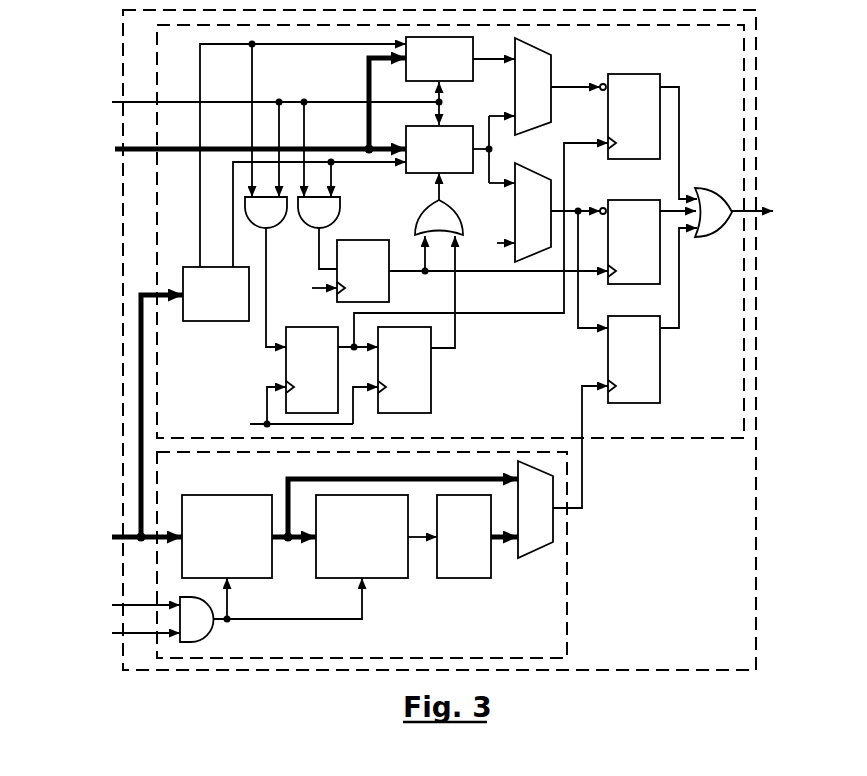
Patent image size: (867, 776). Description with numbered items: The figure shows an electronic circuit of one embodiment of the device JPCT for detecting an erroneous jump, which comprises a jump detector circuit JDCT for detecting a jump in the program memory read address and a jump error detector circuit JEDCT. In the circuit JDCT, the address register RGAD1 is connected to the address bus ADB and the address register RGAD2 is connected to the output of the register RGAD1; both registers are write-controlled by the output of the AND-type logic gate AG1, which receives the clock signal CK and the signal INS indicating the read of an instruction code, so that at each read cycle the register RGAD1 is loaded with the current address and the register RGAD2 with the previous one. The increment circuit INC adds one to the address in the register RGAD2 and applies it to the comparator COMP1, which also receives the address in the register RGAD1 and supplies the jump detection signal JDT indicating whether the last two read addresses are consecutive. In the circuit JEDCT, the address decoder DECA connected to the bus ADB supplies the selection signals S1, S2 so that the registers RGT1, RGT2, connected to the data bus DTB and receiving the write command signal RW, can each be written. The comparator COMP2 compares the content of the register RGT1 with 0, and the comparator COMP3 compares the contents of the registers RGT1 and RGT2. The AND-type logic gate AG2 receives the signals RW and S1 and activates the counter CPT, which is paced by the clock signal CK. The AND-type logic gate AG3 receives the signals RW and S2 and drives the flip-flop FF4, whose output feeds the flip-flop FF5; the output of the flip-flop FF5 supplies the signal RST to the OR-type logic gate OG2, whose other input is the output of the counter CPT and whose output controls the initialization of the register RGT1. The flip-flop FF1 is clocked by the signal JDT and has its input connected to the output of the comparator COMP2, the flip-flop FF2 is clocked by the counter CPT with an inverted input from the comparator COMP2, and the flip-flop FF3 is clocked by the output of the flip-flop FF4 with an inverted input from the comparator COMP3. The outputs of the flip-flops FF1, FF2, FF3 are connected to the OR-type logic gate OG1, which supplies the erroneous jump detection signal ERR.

The device for detecting an erroneous jump JPCT is at (741, 657).
The jump error detector circuit JEDCT is at (735, 58).
The jump detector circuit JDCT is at (222, 483).
The first register RGT1 is at (467, 162).
The second register RGT2 is at (467, 72).
The comparator COMP1 is at (544, 477).
The comparator COMP2 is at (541, 180).
The comparator COMP3 is at (541, 55).
The flip-flop FF1 is at (616, 371).
The flip-flop FF2 is at (616, 257).
The flip-flop FF3 is at (616, 127).
The flip-flop FF4 is at (294, 380).
The flip-flop FF5 is at (387, 380).
The counter CPT is at (345, 270).
The address decoder DECA is at (188, 306).
The address register RGAD1 is at (193, 550).
The address register RGAD2 is at (328, 550).
The increment circuit INC is at (446, 551).
The AND-type logic gate AG1 is at (205, 630).
The AND-type logic gate AG2 is at (336, 212).
The AND-type logic gate AG3 is at (275, 220).
The OR-type logic gate OG1 is at (704, 192).
The OR-type logic gate OG2 is at (431, 210).
The write command signal RW is at (259, 143).
The data bus DTB is at (215, 110).
The address bus ADB is at (120, 420).
The instruction read signal INS is at (129, 604).
The clock signal CK is at (231, 460).
The selection signal S1 is at (306, 213).
The selection signal S2 is at (290, 154).
The erroneous jump detection signal ERR is at (774, 211).
The jump detection signal JDT is at (588, 449).
The reset signal RST is at (466, 294).
The zero value 0 is at (499, 243).